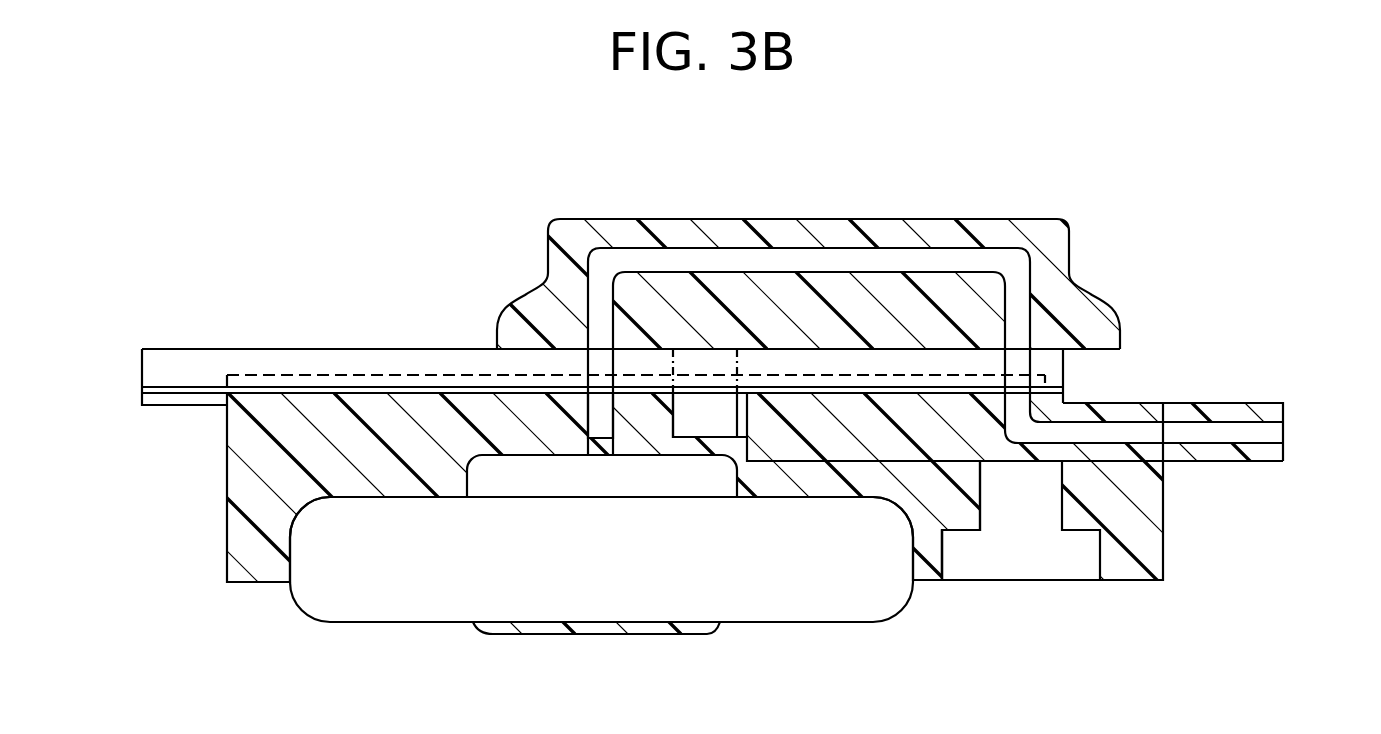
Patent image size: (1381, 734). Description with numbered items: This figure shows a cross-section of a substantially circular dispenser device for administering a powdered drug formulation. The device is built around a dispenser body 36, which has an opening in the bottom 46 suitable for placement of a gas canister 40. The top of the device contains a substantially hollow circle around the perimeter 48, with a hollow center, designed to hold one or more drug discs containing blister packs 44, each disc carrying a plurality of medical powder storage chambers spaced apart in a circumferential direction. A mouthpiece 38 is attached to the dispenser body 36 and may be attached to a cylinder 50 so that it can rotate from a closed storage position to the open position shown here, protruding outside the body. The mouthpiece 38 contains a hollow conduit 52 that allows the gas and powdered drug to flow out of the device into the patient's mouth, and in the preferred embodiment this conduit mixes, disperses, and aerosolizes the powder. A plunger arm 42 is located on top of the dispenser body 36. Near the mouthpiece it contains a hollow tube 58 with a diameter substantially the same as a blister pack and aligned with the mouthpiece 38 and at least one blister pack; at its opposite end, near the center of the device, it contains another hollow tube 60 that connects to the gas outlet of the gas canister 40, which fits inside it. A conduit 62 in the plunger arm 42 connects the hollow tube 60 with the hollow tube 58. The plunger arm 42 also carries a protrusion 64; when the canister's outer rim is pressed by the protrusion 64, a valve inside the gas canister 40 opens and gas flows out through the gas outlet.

The dispenser body 36 is at (227, 450).
The mouthpiece 38 is at (1237, 462).
The gas canister 40 is at (417, 612).
The plunger arm 42 is at (938, 218).
The drug discs containing blister packs 44 is at (182, 388).
The opening in the bottom 46 is at (290, 585).
The hollow circle around the perimeter 48 is at (142, 372).
The cylinder 50 is at (1023, 560).
The hollow conduit 52 is at (1273, 432).
The hollow tube proximal to the mouthpiece 58 is at (1022, 310).
The hollow tube proximal to the center 60 is at (597, 327).
The conduit 62 is at (773, 258).
The protrusion 64 is at (692, 400).